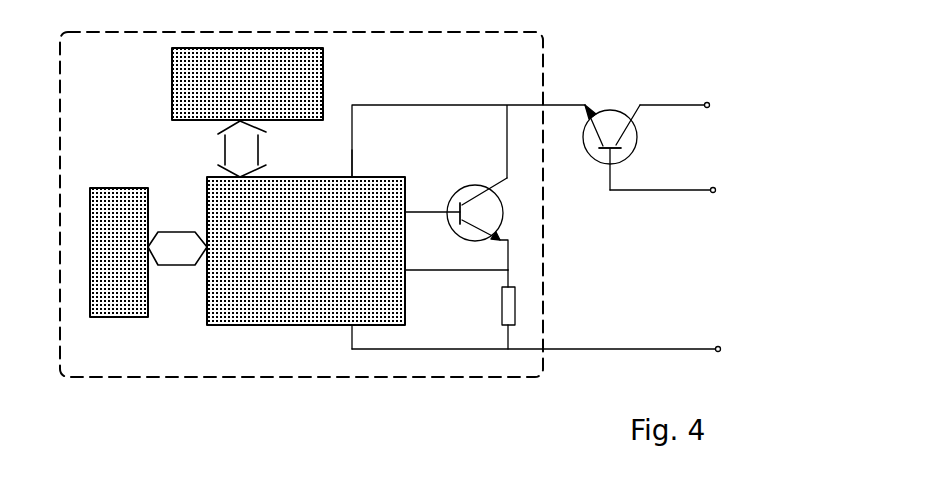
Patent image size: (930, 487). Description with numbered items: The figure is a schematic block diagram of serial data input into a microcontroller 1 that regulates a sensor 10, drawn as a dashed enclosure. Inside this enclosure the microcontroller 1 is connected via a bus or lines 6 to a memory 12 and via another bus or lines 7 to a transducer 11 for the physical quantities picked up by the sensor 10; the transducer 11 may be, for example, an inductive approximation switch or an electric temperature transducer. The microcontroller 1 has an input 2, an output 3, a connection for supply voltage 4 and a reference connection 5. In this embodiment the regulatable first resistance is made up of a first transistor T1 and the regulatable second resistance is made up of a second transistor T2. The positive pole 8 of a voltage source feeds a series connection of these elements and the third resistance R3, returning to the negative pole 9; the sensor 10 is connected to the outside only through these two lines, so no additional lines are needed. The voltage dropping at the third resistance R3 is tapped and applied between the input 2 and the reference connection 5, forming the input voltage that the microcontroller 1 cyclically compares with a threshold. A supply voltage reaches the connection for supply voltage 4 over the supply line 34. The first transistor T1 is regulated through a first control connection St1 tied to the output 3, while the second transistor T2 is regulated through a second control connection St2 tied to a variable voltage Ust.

The microcontroller 1 is at (288, 270).
The input 2 is at (442, 274).
The output 3 is at (415, 217).
The connection for supply voltage 4 is at (344, 184).
The reference connection 5 is at (349, 319).
The bus or lines 6 is at (170, 268).
The bus or lines 7 is at (243, 152).
The positive pole of voltage source 8 is at (708, 93).
The negative pole of voltage source 9 is at (717, 340).
The sensor 10 is at (190, 378).
The transducer 11 is at (193, 78).
The memory 12 is at (108, 227).
The supply line 34 is at (358, 67).
The first transistor T1 is at (458, 187).
The second transistor T2 is at (595, 160).
The first control connection St1 is at (445, 218).
The second control connection St2 is at (620, 160).
The third resistance R3 is at (516, 306).
The variable voltage Ust is at (716, 198).